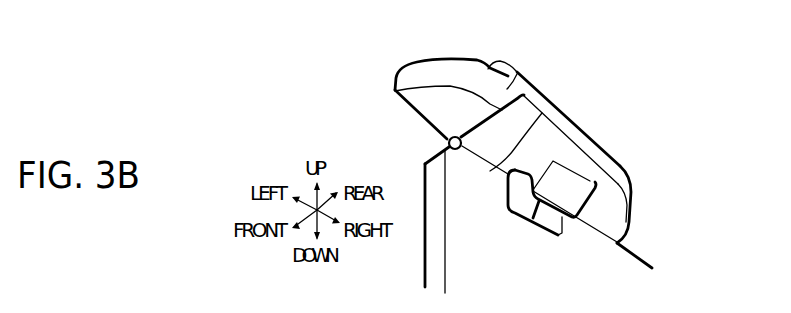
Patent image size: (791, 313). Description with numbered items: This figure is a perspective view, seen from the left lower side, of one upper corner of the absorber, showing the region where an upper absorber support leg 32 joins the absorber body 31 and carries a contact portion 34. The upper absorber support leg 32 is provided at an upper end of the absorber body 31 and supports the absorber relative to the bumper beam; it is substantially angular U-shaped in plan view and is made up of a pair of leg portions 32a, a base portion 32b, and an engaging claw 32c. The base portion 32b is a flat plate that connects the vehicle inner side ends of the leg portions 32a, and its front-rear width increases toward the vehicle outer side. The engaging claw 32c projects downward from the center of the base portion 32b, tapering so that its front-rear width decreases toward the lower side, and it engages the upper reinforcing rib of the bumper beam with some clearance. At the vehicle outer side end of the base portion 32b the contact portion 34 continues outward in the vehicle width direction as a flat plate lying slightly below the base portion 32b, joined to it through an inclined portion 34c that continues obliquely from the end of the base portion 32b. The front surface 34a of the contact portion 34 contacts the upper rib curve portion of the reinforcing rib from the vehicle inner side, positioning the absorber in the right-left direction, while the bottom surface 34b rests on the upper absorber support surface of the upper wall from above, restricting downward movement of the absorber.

The absorber body 31 is at (470, 255).
The upper absorber support leg 32 is at (579, 170).
The leg portion 32a is at (559, 110).
The base portion 32b is at (627, 176).
The engaging claw 32c is at (568, 188).
The contact portion 34 is at (444, 91).
The front surface 34a is at (394, 94).
The bottom surface 34b is at (434, 109).
The inclined portion 34c is at (514, 80).